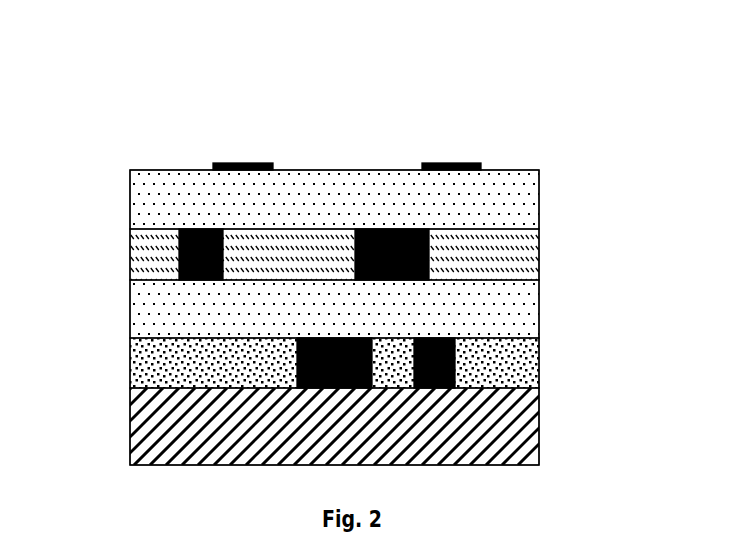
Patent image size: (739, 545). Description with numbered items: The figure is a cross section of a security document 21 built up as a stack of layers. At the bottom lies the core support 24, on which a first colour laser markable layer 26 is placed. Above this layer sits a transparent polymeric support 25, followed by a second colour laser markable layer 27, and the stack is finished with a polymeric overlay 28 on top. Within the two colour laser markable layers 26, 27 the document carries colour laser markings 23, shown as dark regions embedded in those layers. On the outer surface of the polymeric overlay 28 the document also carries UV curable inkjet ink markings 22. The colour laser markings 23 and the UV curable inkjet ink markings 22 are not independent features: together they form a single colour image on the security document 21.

The security document 21 is at (305, 105).
The UV curable inkjet ink markings 22 is at (255, 163).
The colour laser markings 23 is at (223, 275).
The core support 24 is at (140, 405).
The transparent polymeric support 25 is at (140, 303).
The colour laser markable layer 26 is at (145, 370).
The colour laser markable layer 27 is at (140, 261).
The polymeric overlay 28 is at (165, 195).